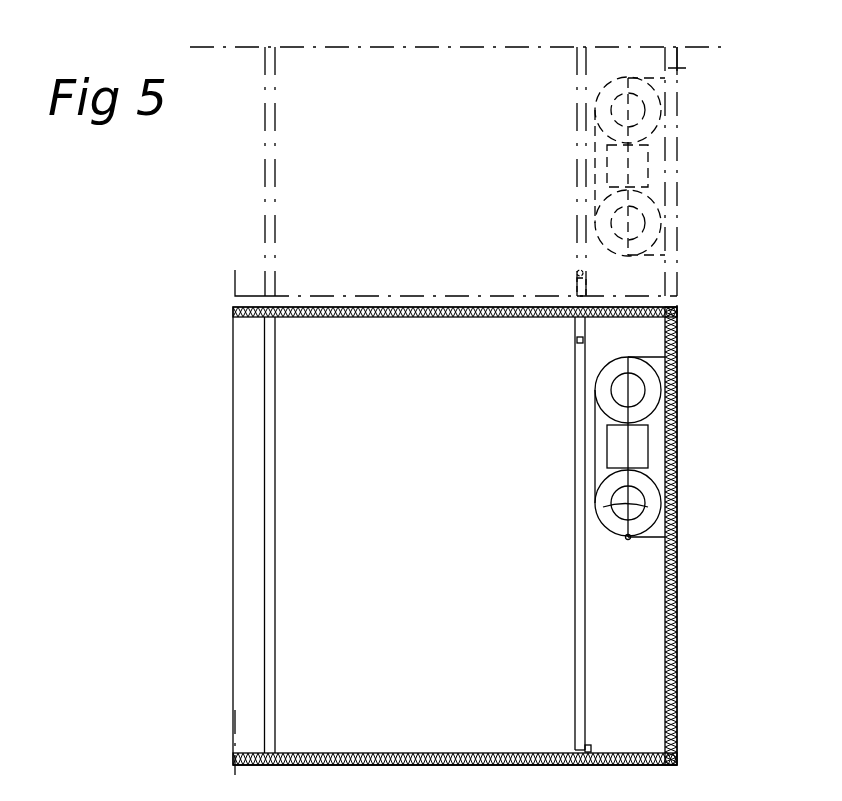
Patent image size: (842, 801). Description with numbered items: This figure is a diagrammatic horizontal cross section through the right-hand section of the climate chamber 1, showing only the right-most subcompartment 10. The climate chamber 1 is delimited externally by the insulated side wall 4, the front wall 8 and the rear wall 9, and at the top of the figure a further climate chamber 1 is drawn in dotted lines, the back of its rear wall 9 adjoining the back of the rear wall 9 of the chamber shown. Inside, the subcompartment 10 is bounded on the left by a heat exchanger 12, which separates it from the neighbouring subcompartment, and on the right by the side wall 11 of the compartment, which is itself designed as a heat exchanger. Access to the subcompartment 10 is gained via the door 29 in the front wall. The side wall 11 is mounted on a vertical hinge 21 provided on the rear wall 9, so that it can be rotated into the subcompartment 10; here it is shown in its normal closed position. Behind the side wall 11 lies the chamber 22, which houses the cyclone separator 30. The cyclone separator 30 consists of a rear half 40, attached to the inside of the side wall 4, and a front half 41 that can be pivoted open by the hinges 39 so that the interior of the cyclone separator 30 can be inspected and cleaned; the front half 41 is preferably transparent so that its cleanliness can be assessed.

The climate chamber 1 is at (700, 135).
The side wall 4 is at (683, 68).
The front wall 8 is at (640, 765).
The rear wall 9 is at (640, 296).
The subcompartment 10 is at (517, 107).
The side wall 11 is at (585, 608).
The heat exchanger 12 is at (270, 510).
The vertical hinge 21 is at (577, 341).
The chamber 22 is at (630, 680).
The door 29 is at (407, 765).
The cyclone separator 30 is at (640, 165).
The hinges 39 is at (635, 540).
The rear half 40 is at (650, 395).
The front half 41 is at (645, 510).